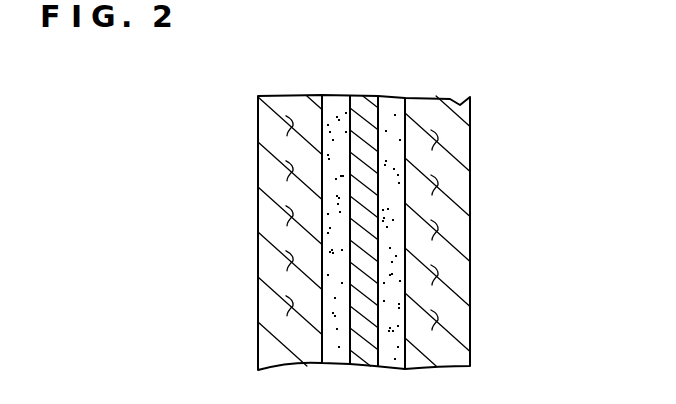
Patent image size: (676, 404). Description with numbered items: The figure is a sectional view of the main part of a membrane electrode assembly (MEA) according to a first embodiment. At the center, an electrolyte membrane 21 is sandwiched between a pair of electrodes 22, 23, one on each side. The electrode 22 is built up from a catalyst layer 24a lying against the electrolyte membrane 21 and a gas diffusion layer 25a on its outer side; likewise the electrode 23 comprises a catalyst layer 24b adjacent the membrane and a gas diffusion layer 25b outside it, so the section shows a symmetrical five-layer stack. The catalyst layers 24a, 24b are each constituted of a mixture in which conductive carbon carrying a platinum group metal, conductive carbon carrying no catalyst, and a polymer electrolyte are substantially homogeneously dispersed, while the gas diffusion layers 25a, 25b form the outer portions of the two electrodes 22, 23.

The electrolyte membrane 21 is at (365, 100).
The electrode 22 is at (357, 47).
The electrode 23 is at (511, 47).
The catalyst layer 24a is at (333, 97).
The catalyst layer 24b is at (398, 97).
The gas diffusion layer 25a is at (292, 108).
The gas diffusion layer 25b is at (433, 117).